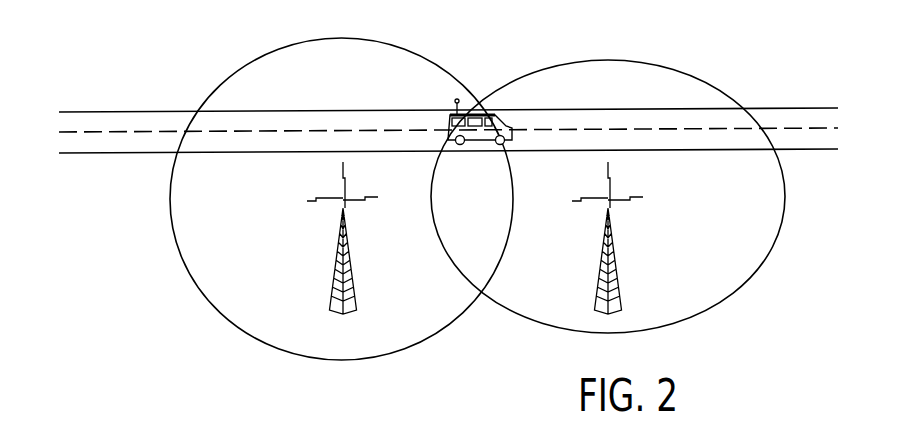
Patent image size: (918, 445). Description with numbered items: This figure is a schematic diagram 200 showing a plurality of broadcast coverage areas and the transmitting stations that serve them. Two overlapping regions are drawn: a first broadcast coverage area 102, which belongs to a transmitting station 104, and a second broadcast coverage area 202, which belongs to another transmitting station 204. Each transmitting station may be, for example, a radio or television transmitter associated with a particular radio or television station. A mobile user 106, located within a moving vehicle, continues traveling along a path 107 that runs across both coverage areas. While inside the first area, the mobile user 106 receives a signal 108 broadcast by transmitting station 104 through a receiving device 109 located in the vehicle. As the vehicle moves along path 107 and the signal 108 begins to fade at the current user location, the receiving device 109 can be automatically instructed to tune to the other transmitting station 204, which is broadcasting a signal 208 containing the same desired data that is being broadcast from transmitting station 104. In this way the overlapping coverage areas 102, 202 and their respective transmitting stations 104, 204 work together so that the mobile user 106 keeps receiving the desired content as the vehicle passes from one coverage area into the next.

The schematic diagram 200 is at (183, 330).
The broadcast coverage area 102 is at (410, 348).
The broadcast coverage area 202 is at (678, 322).
The transmitting station 104 is at (335, 278).
The transmitting station 204 is at (598, 277).
The signal 108 is at (319, 213).
The signal 208 is at (632, 208).
The mobile user 106 is at (492, 111).
The receiving device 109 is at (446, 102).
The path 107 is at (759, 107).